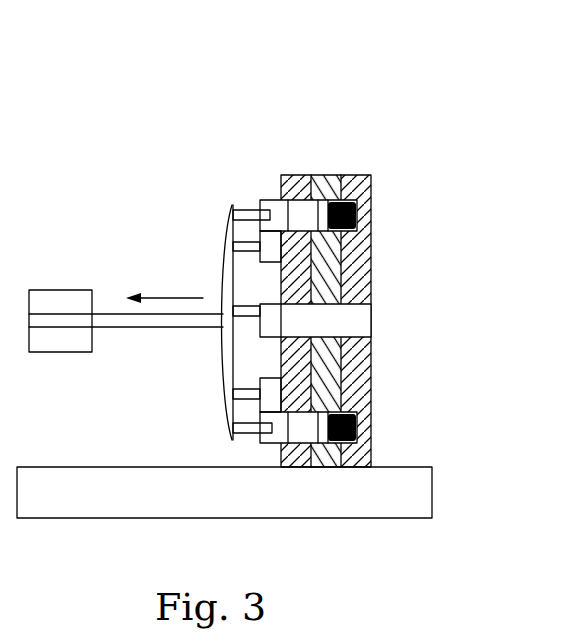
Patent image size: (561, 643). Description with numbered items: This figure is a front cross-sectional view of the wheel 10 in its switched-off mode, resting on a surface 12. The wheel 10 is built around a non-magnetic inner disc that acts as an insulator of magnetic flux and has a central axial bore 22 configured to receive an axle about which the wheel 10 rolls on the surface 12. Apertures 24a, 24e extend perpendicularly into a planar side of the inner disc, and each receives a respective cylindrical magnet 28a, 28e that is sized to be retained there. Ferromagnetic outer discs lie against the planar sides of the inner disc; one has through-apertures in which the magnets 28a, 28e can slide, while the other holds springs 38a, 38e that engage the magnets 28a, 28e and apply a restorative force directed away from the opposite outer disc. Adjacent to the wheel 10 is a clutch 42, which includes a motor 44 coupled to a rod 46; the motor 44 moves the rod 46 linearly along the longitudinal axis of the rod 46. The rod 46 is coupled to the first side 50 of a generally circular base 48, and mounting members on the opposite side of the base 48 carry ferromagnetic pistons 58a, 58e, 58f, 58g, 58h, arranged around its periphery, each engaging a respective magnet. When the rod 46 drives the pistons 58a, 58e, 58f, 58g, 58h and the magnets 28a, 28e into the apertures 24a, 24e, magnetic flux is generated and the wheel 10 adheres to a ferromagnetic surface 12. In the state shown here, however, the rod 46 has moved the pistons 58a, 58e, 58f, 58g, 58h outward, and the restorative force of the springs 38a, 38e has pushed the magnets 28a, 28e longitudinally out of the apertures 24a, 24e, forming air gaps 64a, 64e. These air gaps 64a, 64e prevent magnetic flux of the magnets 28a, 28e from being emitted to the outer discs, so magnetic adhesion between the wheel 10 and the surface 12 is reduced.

The wheel 10 is at (389, 99).
The surface 12 is at (75, 467).
The central axial bore 22 is at (384, 325).
The aperture 24a is at (368, 186).
The aperture 24e is at (358, 446).
The magnet 28a is at (305, 208).
The magnet 28e is at (307, 440).
The spring 38a is at (352, 214).
The spring 38e is at (353, 426).
The clutch 42 is at (238, 158).
The motor 44 is at (45, 290).
The rod 46 is at (127, 328).
The base 48 is at (225, 412).
The first side 50 is at (223, 342).
The piston 58a is at (266, 208).
The piston 58e is at (272, 440).
The piston 58f is at (233, 383).
The piston 58g is at (258, 309).
The piston 58h is at (265, 255).
The air gap 64a is at (325, 206).
The air gap 64e is at (324, 438).